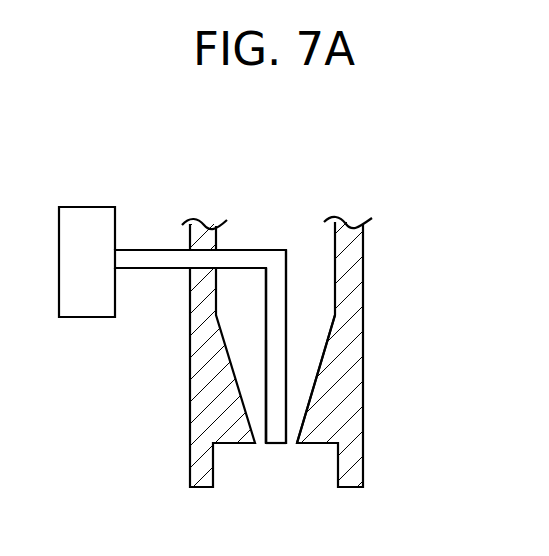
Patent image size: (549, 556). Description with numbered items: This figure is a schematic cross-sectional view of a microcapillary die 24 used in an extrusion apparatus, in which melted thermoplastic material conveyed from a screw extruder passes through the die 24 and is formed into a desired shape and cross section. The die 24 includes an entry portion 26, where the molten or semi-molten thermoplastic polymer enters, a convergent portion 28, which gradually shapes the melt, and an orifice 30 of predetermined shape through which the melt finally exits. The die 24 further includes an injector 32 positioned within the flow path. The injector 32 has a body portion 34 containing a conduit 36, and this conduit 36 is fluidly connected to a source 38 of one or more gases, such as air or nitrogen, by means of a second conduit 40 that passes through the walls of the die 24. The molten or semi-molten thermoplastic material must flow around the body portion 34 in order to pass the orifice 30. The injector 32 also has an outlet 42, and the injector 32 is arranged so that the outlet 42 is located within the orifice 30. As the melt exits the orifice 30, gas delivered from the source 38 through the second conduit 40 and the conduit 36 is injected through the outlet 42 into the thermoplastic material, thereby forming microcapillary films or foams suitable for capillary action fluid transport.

The die 24 is at (412, 296).
The entry portion 26 is at (216, 240).
The convergent portion 28 is at (319, 363).
The orifice 30 is at (257, 443).
The injector 32 is at (291, 383).
The body portion 34 is at (265, 364).
The conduit 36 is at (277, 330).
The gas source 38 is at (88, 297).
The second conduit 40 is at (163, 260).
The outlet 42 is at (285, 443).